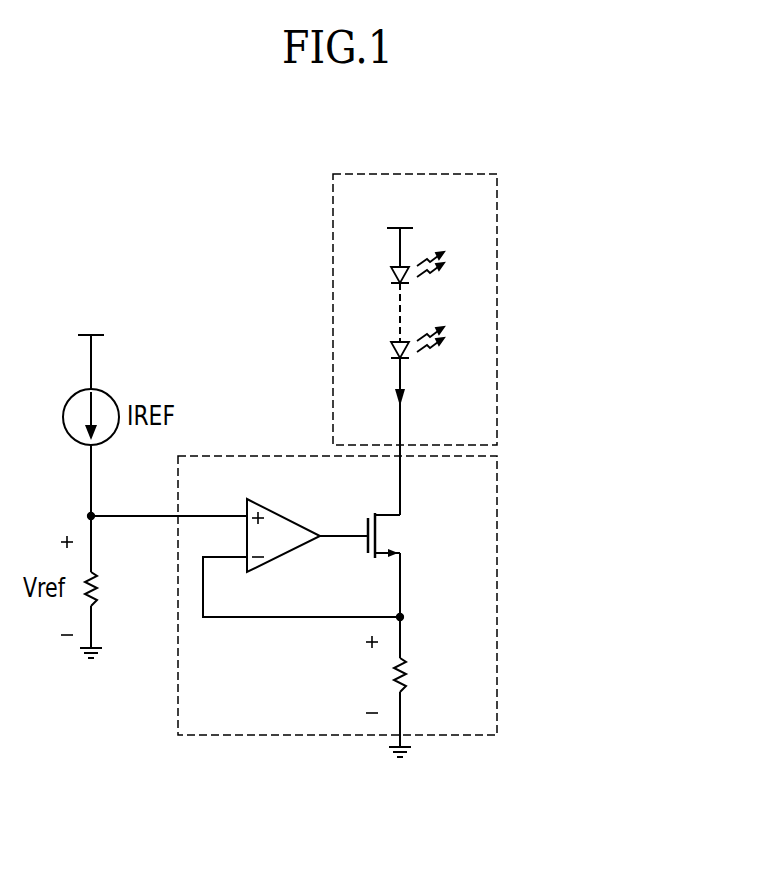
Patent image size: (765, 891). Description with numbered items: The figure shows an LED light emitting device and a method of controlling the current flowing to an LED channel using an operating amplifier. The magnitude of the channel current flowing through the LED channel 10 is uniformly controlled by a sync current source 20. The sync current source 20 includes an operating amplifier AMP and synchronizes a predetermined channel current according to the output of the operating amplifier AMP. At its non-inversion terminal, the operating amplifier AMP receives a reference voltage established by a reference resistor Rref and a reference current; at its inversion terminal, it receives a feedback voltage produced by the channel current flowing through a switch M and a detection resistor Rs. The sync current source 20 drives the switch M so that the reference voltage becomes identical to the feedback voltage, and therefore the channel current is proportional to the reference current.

The LED channel 10 is at (497, 238).
The sync current source 20 is at (497, 522).
The operating amplifier AMP is at (288, 513).
The switch M is at (396, 565).
The detection resistor Rs is at (414, 687).
The reference resistor Rref is at (116, 615).